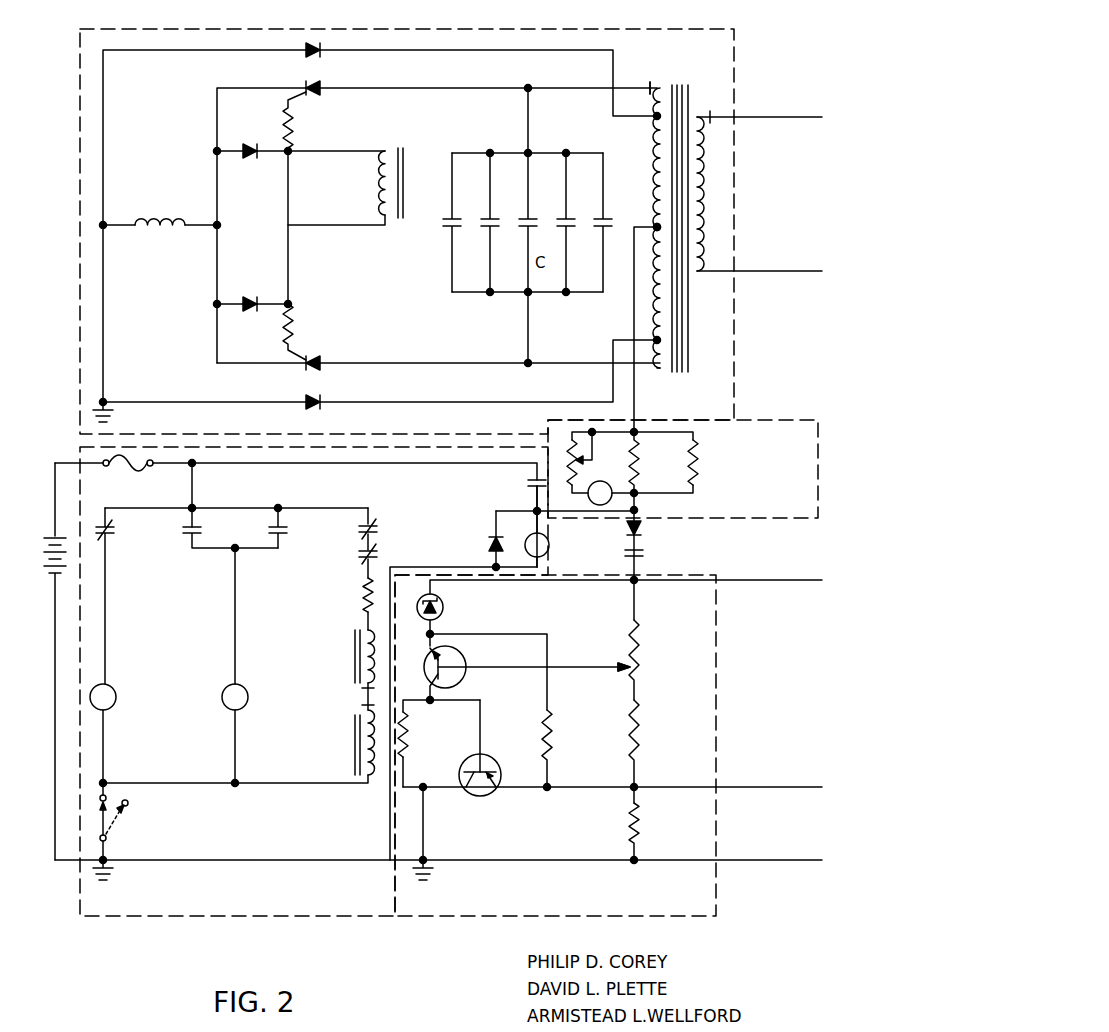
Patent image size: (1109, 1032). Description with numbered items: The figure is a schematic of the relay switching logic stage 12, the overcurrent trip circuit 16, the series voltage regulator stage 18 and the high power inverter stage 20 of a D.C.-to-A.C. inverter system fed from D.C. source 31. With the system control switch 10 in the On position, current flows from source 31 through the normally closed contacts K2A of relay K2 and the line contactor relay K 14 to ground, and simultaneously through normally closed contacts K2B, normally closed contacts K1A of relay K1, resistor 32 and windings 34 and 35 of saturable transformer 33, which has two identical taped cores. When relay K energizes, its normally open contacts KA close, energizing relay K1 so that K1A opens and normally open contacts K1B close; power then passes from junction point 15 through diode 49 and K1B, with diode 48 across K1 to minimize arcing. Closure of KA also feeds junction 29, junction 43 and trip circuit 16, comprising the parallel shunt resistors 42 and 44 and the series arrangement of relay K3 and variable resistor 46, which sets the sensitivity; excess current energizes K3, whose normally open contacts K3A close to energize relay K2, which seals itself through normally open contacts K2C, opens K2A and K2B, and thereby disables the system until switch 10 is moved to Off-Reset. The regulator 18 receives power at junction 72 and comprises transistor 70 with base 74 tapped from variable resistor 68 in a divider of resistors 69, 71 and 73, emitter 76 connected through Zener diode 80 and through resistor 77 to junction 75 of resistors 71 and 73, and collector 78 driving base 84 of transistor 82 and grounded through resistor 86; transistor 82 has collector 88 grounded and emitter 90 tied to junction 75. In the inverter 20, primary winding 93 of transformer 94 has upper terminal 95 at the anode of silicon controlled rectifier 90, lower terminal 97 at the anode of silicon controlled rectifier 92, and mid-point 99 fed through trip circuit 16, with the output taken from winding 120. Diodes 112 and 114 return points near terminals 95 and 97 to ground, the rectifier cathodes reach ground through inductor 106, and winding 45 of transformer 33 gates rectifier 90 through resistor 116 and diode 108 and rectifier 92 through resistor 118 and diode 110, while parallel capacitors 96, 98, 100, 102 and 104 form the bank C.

The system control switch 10 is at (146, 841).
The relay switching logic stage 12 is at (255, 916).
The relay K 14 is at (112, 706).
The junction point 15 is at (534, 510).
The overcurrent trip circuit 16 is at (720, 520).
The voltage regulator stage 18 is at (525, 916).
The high power inverter stage 20 is at (463, 29).
The junction 29 is at (195, 506).
The D.C. source 31 is at (43, 516).
The resistor 32 is at (362, 592).
The saturable transformer 33 is at (406, 139).
The winding 34 is at (362, 620).
The winding 35 is at (364, 712).
The resistor 42 is at (640, 472).
The junction 43 is at (638, 510).
The resistor 44 is at (686, 460).
The winding 45 is at (384, 202).
The variable resistor 46 is at (578, 470).
The diode 48 is at (487, 546).
The diode 49 is at (640, 532).
The variable resistor 68 is at (638, 657).
The resistor 69 is at (630, 610).
The transistor 70 is at (515, 668).
The resistor 71 is at (640, 727).
The junction 72 is at (630, 578).
The resistor 73 is at (640, 836).
The base 74 is at (470, 664).
The junction 75 is at (638, 784).
The emitter 76 is at (444, 648).
The resistor 77 is at (552, 727).
The collector 78 is at (436, 660).
The Zener diode 80 is at (440, 603).
The transistor 82 is at (476, 748).
The base 84 is at (484, 740).
The resistor 86 is at (408, 725).
The collector 88 is at (464, 782).
The silicon controlled rectifier 90 is at (318, 94).
The silicon controlled rectifier 92 is at (320, 358).
The primary winding 93 is at (656, 150).
The transformer 94 is at (684, 67).
The upper terminal 95 is at (657, 80).
The capacitor 96 is at (449, 218).
The lower terminal 97 is at (662, 368).
The capacitor 98 is at (487, 218).
The mid-point 99 is at (651, 220).
The capacitor 100 is at (525, 218).
The capacitor 102 is at (563, 218).
The capacitor 104 is at (600, 218).
The inductor 106 is at (163, 219).
The diode 108 is at (258, 128).
The diode 110 is at (252, 281).
The diode 112 is at (316, 56).
The diode 114 is at (316, 406).
The resistor 116 is at (288, 120).
The resistor 118 is at (282, 328).
The secondary winding 120 is at (699, 168).
The relay K1 is at (537, 526).
The relay K2 is at (235, 665).
The relay K3 is at (600, 493).
The normally open contacts KA is at (526, 483).
The normally closed contacts K1A is at (362, 554).
The normally open contacts K1B is at (642, 552).
The normally closed contacts K2A is at (114, 530).
The normally closed contacts K2B is at (362, 528).
The normally open contacts K2C is at (201, 530).
The normally open contacts K3A is at (287, 535).